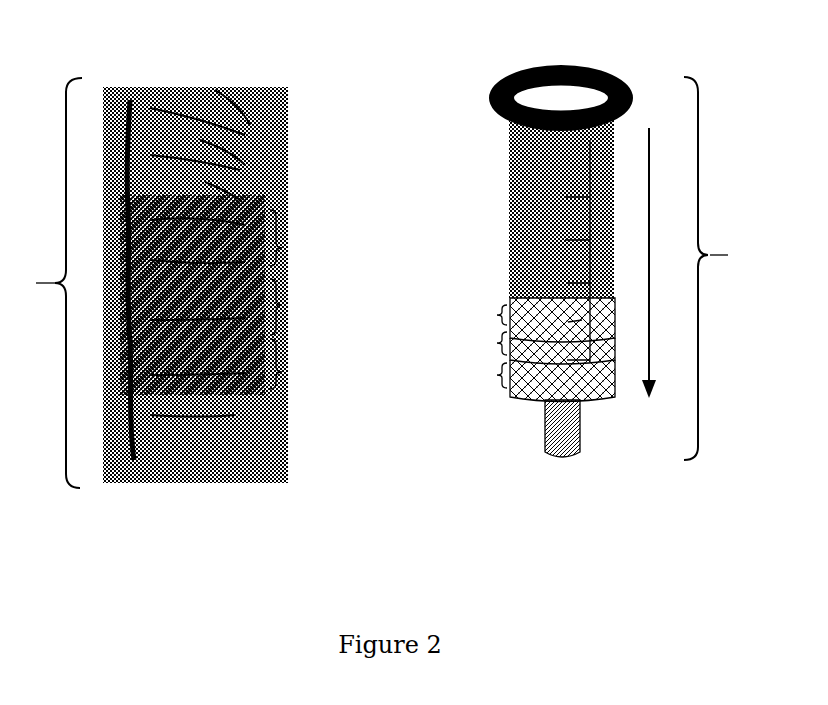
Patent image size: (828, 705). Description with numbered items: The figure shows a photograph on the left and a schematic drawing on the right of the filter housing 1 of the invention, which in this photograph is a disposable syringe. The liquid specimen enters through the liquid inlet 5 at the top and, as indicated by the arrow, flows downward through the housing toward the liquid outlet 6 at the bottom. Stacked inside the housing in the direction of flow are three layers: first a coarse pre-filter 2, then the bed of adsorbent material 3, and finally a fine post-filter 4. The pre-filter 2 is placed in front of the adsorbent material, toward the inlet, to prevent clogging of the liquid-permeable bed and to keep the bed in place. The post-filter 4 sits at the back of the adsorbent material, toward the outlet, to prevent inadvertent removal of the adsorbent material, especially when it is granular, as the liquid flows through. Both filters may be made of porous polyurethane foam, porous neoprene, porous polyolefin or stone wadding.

The filter housing 1 is at (388, 268).
The pre-filter 2 is at (290, 248).
The bed of adsorbent material 3 is at (300, 305).
The post-filter 4 is at (303, 372).
The liquid inlet 5 is at (561, 95).
The liquid outlet 6 is at (561, 467).